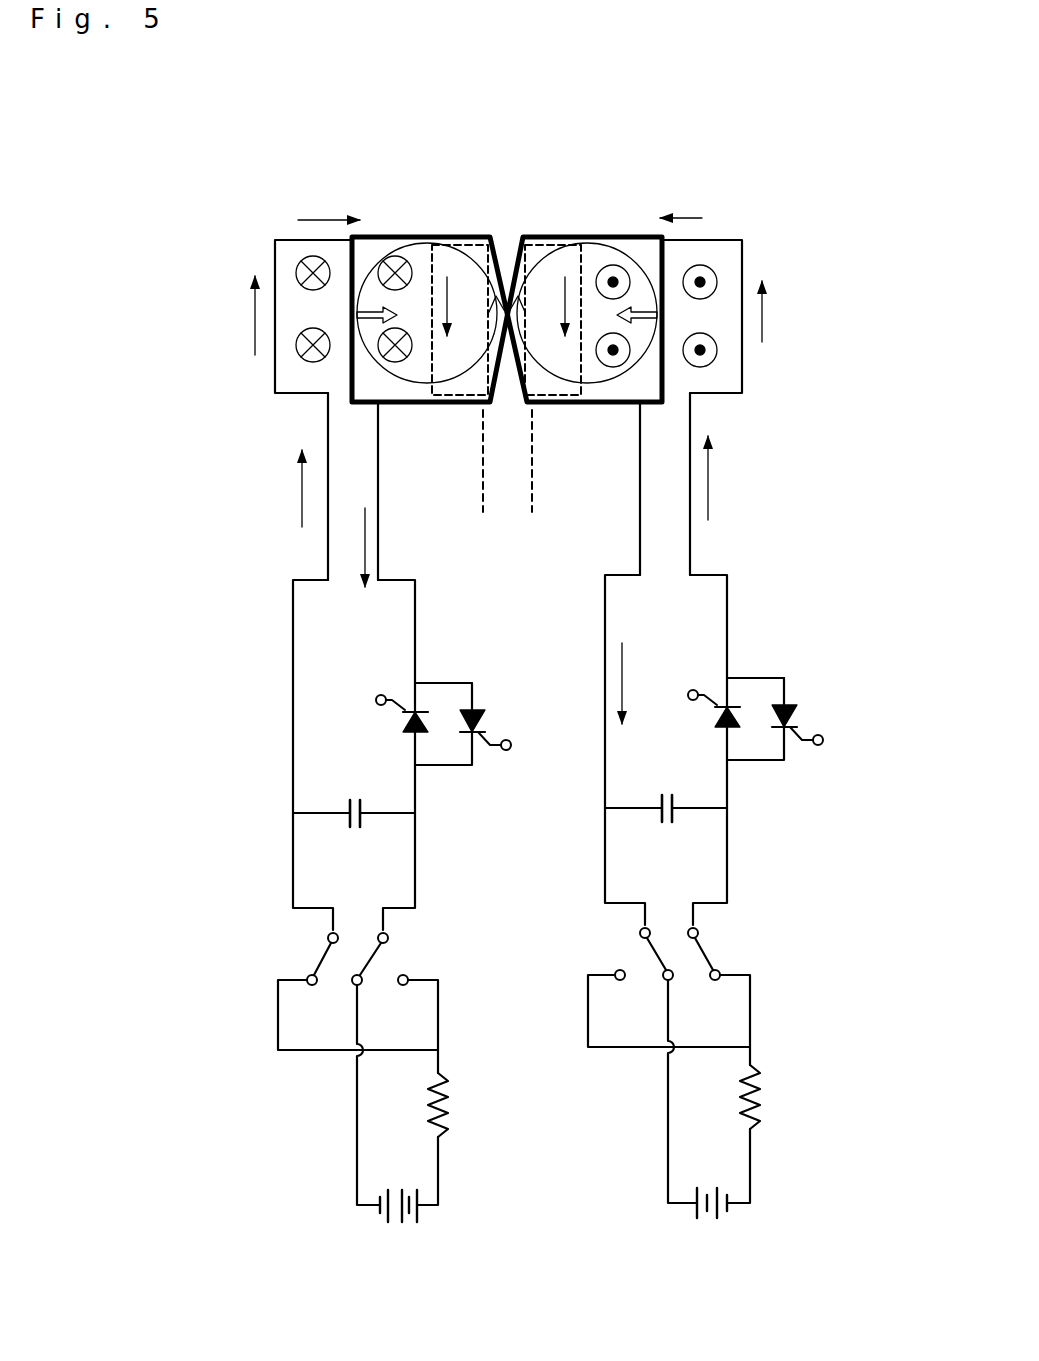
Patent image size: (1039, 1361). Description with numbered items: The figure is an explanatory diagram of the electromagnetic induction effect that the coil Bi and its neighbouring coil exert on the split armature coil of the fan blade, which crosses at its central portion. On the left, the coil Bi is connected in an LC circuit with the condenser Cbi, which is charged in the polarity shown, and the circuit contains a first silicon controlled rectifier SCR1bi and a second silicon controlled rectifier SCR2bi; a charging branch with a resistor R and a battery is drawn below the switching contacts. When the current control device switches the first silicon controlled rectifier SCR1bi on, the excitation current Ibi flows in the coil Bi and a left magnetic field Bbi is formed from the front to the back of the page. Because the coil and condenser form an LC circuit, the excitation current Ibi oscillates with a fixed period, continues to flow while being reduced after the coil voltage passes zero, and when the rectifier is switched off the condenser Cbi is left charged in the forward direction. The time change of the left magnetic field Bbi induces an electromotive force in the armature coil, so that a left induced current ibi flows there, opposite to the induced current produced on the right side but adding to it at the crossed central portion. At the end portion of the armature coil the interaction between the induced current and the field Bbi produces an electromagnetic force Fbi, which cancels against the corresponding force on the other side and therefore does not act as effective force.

The coil Bi is at (275, 360).
The left magnetic field Bbi is at (306, 258).
The electromagnetic force Fbi is at (360, 310).
The left induced current ibi is at (360, 385).
The excitation current Ibi is at (326, 543).
The second silicon controlled rectifier SCR2bi is at (392, 698).
The first silicon controlled rectifier SCR1bi is at (477, 741).
The condenser Cbi is at (354, 827).
The resistor R is at (605, 1101).